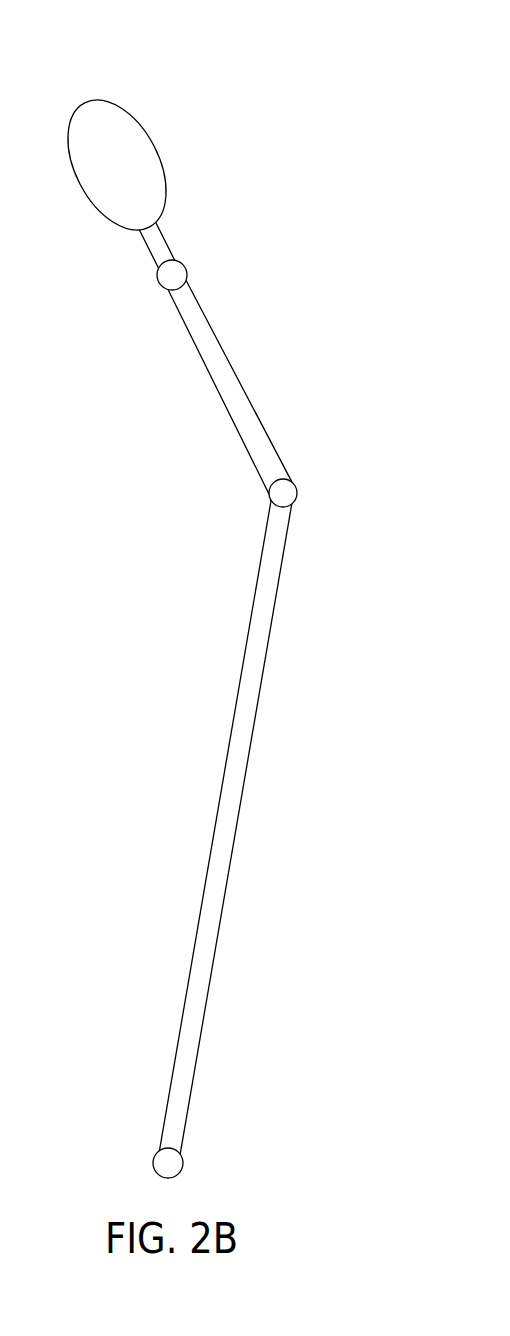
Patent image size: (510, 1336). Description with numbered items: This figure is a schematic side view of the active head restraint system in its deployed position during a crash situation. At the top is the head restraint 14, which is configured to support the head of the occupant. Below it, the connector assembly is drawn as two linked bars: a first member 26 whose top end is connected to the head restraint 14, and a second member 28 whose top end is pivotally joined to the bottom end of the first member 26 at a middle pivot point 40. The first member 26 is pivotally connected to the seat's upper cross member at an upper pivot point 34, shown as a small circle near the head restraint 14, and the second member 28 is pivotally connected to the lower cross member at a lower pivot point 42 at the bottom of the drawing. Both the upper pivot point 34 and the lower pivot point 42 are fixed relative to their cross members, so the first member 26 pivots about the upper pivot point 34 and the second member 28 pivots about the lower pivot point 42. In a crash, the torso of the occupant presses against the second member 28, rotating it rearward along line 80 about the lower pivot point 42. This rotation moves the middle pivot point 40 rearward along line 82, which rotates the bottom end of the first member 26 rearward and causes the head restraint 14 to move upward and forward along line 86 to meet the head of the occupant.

The head restraint 14 is at (147, 128).
The first member 26 is at (258, 402).
The second member 28 is at (279, 635).
The upper pivot point 34 is at (172, 275).
The middle pivot point 40 is at (297, 493).
The lower pivot point 42 is at (157, 1165).
The line 80 is at (240, 590).
The line 82 is at (253, 497).
The line 86 is at (181, 158).